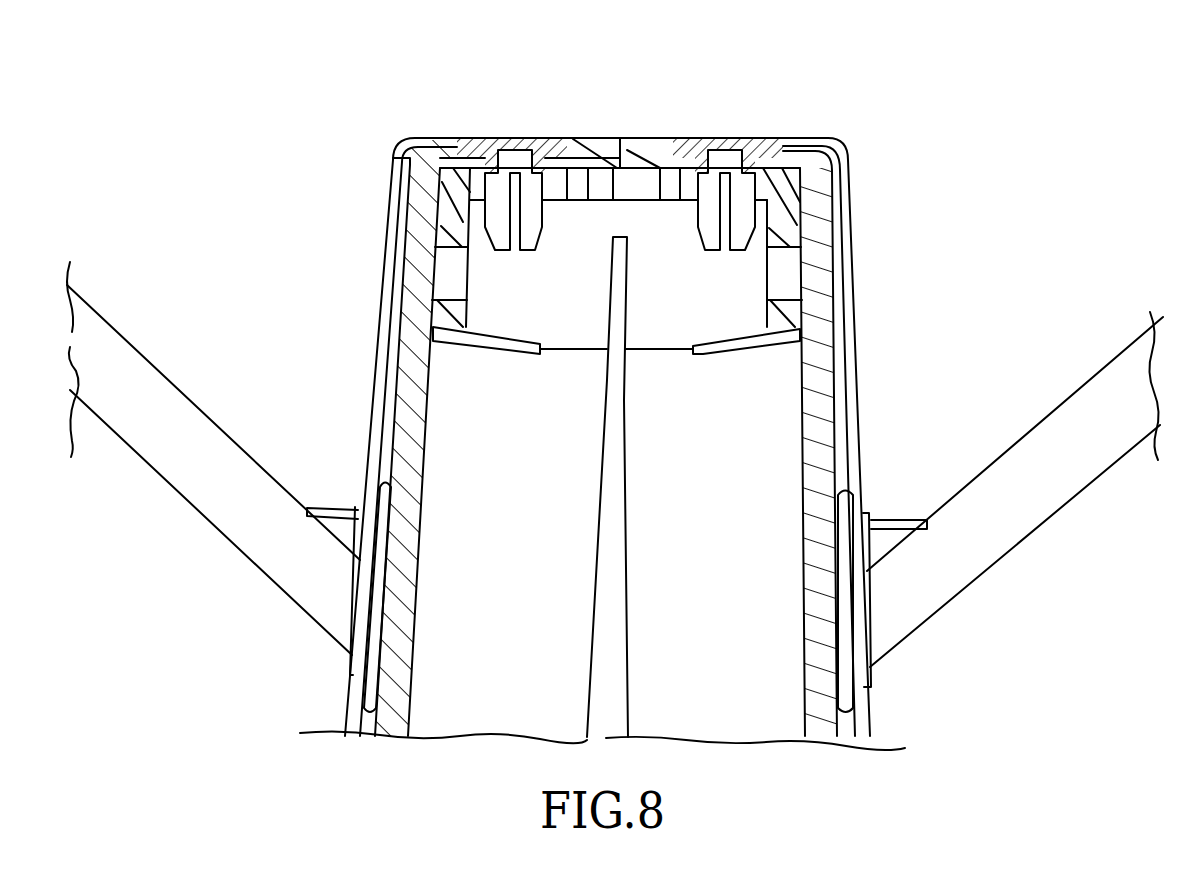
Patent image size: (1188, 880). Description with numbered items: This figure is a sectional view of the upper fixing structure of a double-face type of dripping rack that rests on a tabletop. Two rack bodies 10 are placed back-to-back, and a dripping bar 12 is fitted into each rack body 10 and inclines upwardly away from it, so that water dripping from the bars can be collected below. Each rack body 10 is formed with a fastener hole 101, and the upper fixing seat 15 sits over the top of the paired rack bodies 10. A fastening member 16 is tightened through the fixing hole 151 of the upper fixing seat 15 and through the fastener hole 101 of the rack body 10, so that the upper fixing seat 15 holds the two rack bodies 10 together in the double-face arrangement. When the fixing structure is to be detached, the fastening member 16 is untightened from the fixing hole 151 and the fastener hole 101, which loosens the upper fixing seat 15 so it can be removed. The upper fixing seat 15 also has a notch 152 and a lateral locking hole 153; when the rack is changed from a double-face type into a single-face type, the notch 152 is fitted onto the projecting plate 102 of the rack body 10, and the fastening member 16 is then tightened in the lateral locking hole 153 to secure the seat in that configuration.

The rack body 10 is at (392, 198).
The dripping bar 12 is at (1020, 550).
The upper fixing seat 15 is at (790, 237).
The fastening member 16 is at (543, 136).
The fastener hole 101 is at (443, 136).
The projecting plate 102 is at (752, 350).
The fixing hole 151 is at (662, 136).
The notch 152 is at (607, 297).
The lateral locking hole 153 is at (453, 247).